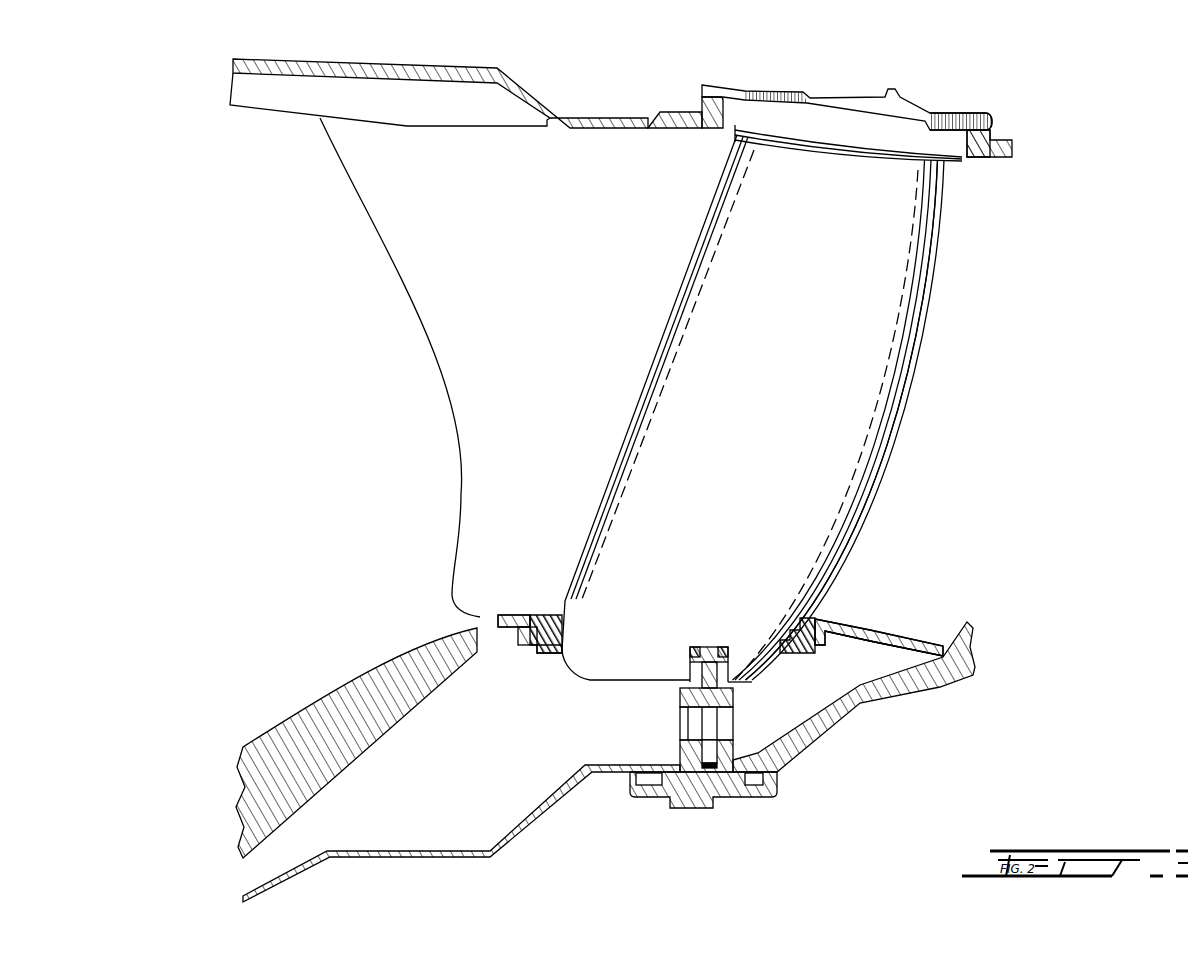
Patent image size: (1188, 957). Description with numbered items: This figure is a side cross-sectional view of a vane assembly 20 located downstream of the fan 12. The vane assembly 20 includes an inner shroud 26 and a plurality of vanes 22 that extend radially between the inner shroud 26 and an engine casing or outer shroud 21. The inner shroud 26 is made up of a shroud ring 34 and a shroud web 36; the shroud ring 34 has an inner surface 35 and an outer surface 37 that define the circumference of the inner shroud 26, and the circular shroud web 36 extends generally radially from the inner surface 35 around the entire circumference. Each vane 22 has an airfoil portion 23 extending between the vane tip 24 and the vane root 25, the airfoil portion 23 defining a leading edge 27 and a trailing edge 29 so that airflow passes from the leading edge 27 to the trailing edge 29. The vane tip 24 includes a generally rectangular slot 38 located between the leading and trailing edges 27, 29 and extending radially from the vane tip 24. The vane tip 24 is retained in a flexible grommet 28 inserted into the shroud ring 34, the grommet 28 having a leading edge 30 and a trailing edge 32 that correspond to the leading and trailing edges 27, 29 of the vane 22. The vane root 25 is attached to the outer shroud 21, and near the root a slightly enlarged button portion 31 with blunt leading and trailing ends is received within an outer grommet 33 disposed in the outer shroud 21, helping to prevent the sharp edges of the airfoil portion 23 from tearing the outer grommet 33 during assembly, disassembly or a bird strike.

The fan 12 is at (370, 200).
The vane assembly 20 is at (788, 357).
The outer shroud 21 is at (1003, 143).
The vane 22 is at (925, 357).
The airfoil portion 23 is at (860, 440).
The vane tip 24 is at (732, 682).
The vane root 25 is at (970, 113).
The inner shroud 26 is at (488, 617).
The leading edge 27 is at (640, 395).
The grommet 28 is at (530, 658).
The trailing edge 29 is at (870, 488).
The leading edge of grommet 30 is at (548, 617).
The button portion 31 is at (900, 135).
The trailing edge of grommet 32 is at (815, 618).
The outer grommet 33 is at (993, 128).
The shroud ring 34 is at (523, 617).
The inner surface 35 is at (866, 634).
The shroud web 36 is at (728, 688).
The outer surface 37 is at (866, 632).
The slot 38 is at (690, 665).